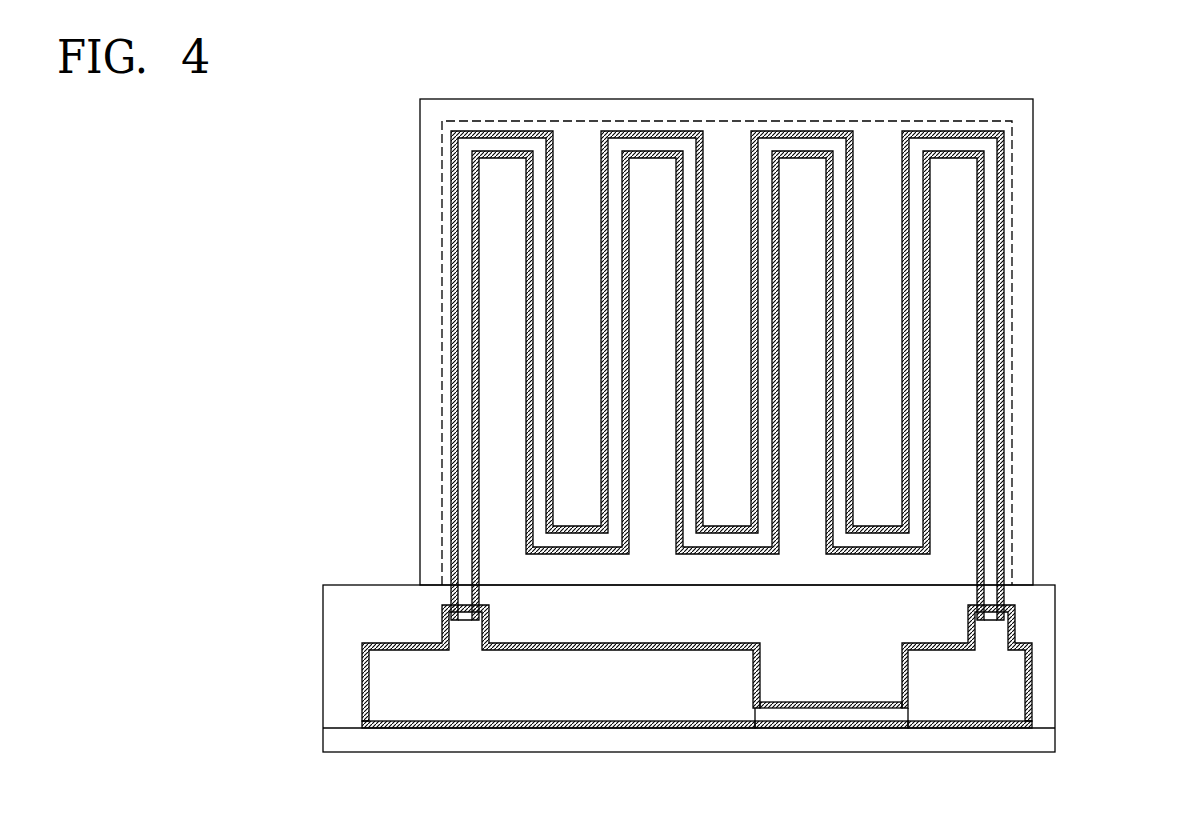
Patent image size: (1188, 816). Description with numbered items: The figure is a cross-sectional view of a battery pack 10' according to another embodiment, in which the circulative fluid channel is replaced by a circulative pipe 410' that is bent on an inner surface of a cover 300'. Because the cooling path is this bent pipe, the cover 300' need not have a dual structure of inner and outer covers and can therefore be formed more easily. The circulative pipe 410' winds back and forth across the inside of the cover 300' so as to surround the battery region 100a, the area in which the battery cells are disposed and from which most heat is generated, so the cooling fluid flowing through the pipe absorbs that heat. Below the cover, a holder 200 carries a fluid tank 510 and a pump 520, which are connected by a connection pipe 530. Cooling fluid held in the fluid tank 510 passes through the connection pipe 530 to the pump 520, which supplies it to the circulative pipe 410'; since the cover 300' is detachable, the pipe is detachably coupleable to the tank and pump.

The battery pack 10' is at (729, 425).
The battery region 100a is at (878, 130).
The holder 200 is at (1047, 673).
The cover 300' is at (790, 335).
The circulative pipe 410' is at (777, 375).
The fluid tank 510 is at (453, 710).
The pump 520 is at (975, 708).
The connection pipe 530 is at (850, 718).